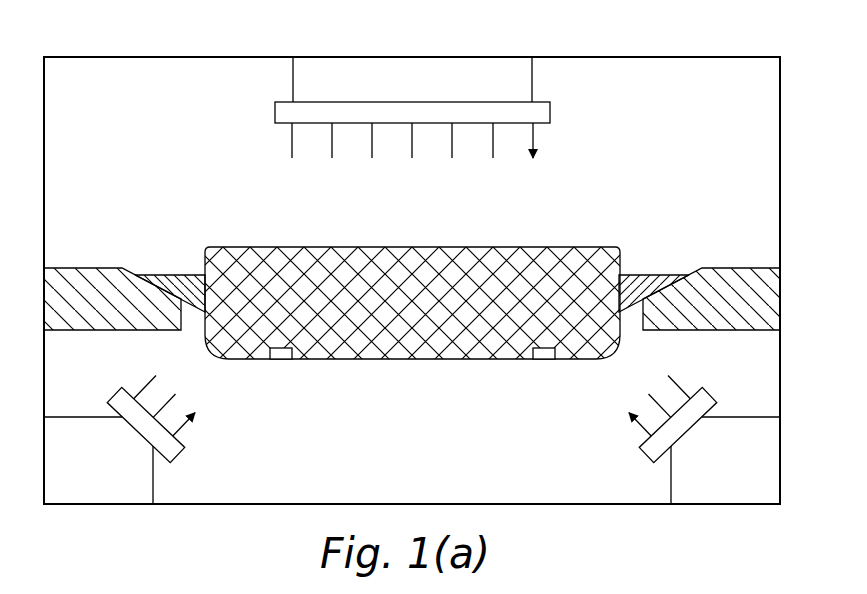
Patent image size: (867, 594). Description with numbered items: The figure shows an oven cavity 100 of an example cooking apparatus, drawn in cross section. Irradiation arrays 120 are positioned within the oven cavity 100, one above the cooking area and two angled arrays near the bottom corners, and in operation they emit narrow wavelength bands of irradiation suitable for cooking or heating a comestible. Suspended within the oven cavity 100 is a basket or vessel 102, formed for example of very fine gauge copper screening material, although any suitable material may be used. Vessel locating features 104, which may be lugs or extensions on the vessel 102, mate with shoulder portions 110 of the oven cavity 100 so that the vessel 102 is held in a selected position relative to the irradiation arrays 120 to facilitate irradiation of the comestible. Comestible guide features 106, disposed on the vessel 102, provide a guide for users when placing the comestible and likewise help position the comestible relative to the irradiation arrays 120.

The oven cavity 100 is at (687, 57).
The vessel 102 is at (478, 247).
The vessel locating features 104 is at (172, 275).
The comestible guide features 106 is at (280, 360).
The shoulder portions 110 is at (97, 268).
The irradiation arrays 120 is at (275, 112).